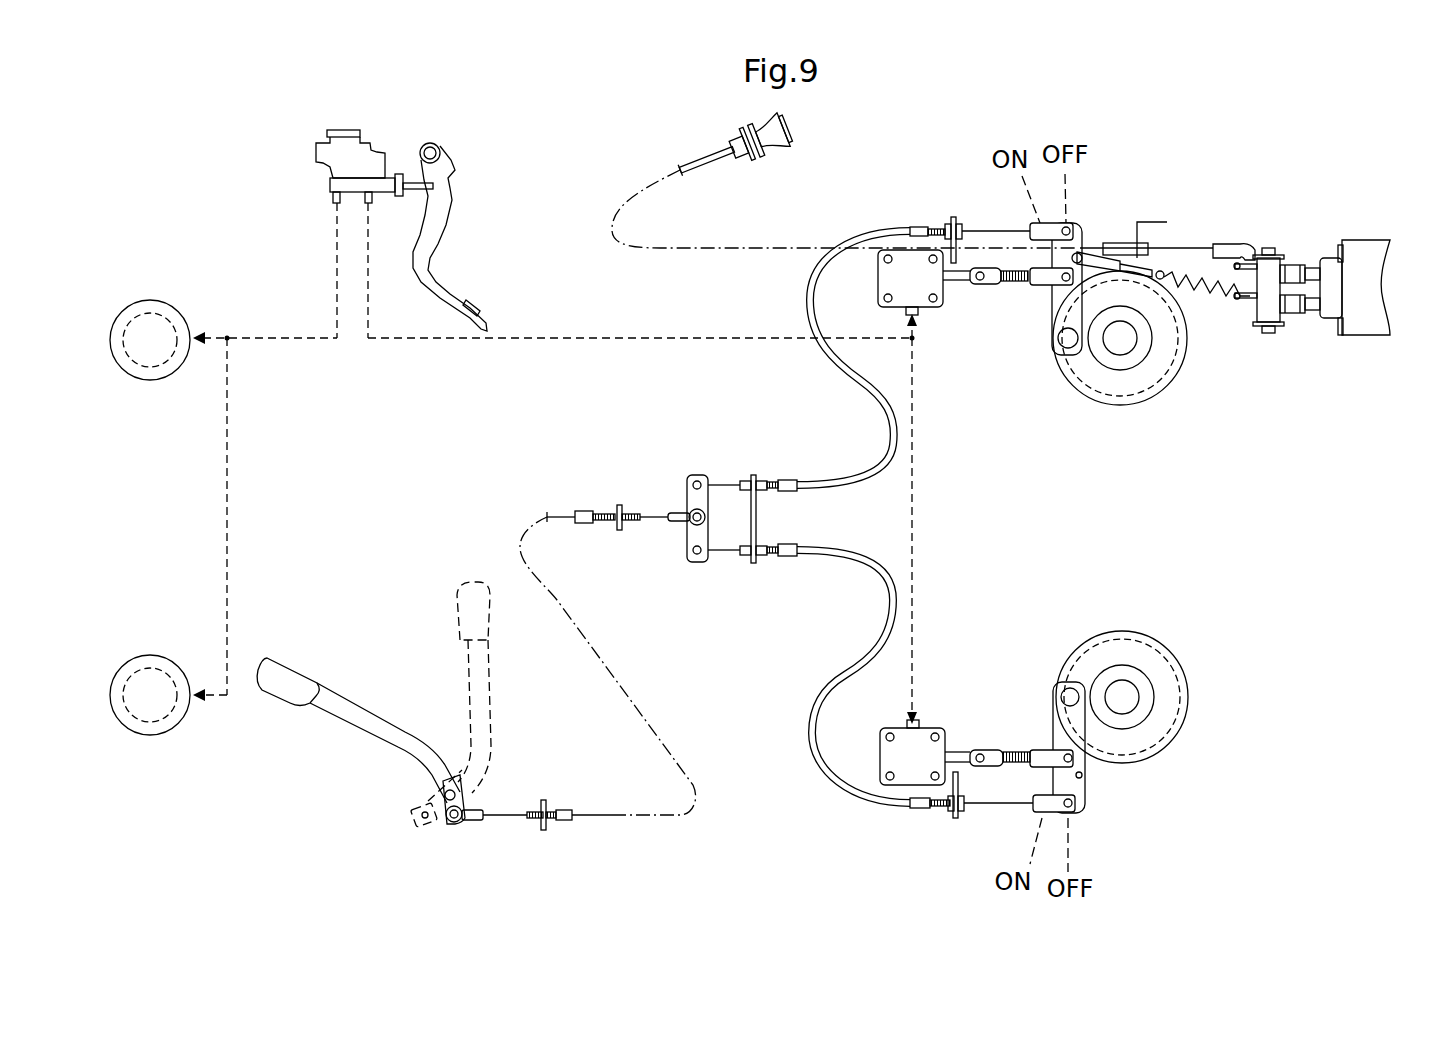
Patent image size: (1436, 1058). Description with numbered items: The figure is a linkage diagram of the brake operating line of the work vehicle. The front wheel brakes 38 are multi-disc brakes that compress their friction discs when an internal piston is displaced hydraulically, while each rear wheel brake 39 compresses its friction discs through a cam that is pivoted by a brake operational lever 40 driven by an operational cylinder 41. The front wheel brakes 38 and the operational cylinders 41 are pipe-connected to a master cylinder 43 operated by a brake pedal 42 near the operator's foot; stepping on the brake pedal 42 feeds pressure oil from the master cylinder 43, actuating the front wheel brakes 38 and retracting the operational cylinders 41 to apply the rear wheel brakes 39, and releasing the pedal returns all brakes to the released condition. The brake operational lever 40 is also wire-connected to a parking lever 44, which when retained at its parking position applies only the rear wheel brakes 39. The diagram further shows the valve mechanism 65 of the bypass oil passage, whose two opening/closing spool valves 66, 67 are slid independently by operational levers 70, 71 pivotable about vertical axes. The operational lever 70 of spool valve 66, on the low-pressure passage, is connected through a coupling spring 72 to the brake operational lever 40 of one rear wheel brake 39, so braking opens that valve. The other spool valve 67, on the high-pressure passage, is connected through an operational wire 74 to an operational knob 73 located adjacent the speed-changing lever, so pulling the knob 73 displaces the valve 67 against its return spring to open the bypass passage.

The front wheel brake 38 is at (150, 300).
The rear wheel brake 39 is at (1150, 398).
The brake operational lever 40 is at (1057, 302).
The operational cylinder 41 is at (887, 270).
The brake pedal 42 is at (474, 303).
The master cylinder 43 is at (330, 186).
The parking lever 44 is at (368, 705).
The valve mechanism 65 is at (1369, 345).
The opening/closing spool valve 66 is at (1315, 318).
The opening/closing spool valve 67 is at (1315, 262).
The operational lever 70 is at (1268, 333).
The operational lever 71 is at (1268, 255).
The coupling spring 72 is at (1190, 270).
The operational knob 73 is at (778, 133).
The operational wire 74 is at (1113, 243).